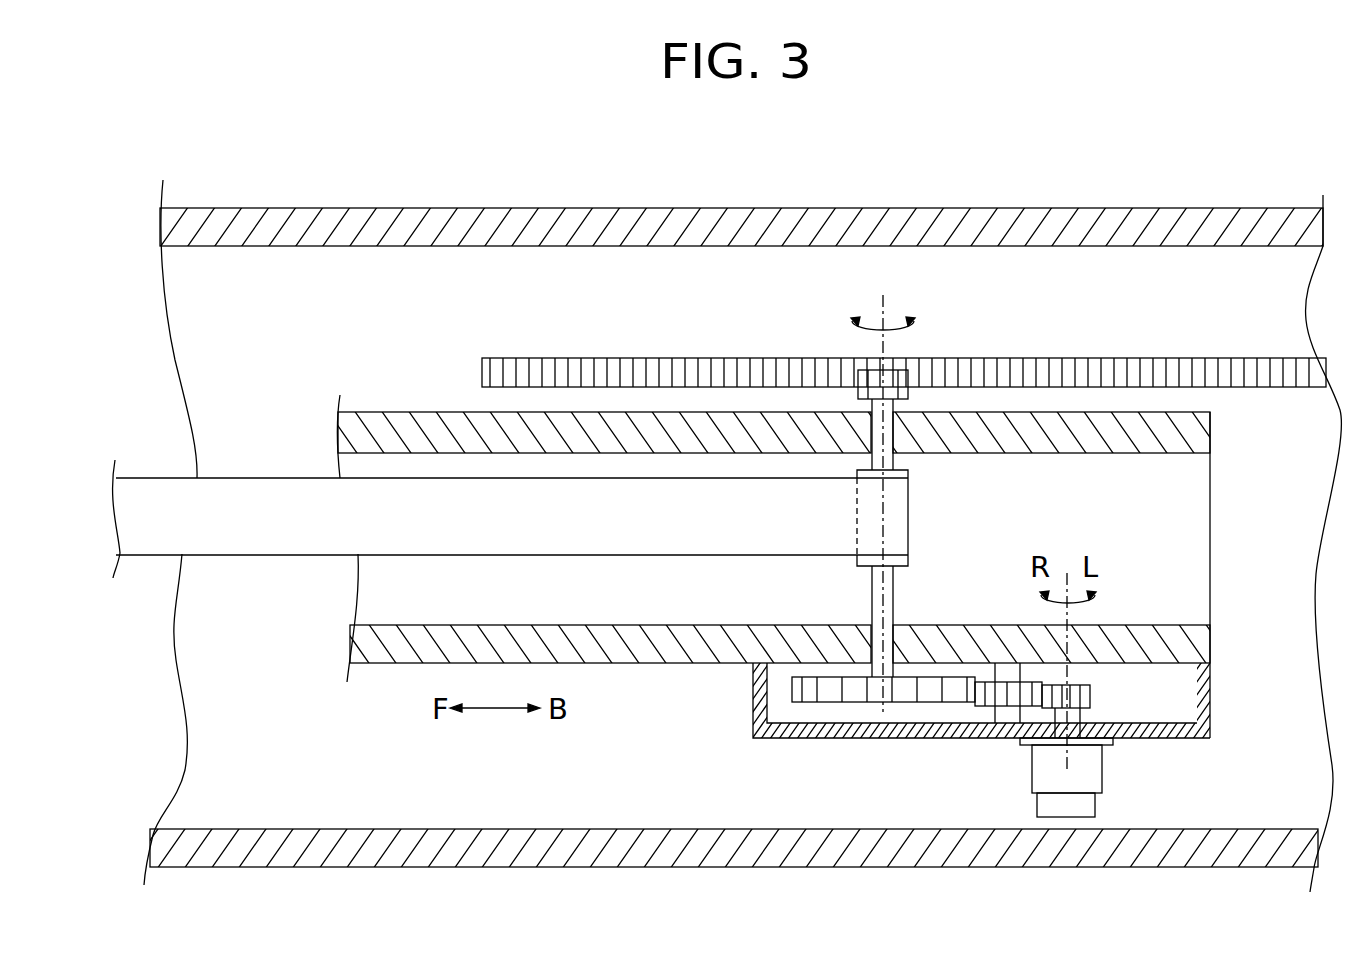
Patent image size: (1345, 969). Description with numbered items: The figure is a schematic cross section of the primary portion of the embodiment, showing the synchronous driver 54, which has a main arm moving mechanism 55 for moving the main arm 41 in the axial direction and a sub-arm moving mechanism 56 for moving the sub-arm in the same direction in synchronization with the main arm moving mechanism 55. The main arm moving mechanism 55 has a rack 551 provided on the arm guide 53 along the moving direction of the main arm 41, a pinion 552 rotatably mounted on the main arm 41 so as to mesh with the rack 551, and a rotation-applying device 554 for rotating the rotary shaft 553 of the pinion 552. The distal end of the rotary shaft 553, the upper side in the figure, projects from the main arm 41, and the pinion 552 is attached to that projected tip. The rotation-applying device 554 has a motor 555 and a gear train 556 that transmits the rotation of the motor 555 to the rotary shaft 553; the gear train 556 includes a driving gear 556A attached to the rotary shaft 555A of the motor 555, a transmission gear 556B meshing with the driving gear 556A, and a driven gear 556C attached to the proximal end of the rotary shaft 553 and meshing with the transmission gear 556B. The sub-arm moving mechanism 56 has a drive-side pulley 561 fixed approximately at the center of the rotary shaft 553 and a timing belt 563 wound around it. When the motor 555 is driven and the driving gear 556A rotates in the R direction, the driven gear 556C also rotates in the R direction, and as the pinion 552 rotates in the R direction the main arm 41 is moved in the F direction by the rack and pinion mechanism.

The main arm 41 is at (390, 418).
The arm guide 53 is at (945, 218).
The synchronous driver 54 is at (1097, 296).
The main arm moving mechanism 55 is at (1082, 518).
The sub-arm moving mechanism 56 is at (779, 567).
The rack 551 is at (1136, 365).
The pinion 552 is at (907, 368).
The rotary shaft 553 is at (889, 588).
The rotation-applying device 554 is at (838, 602).
The motor 555 is at (1087, 782).
The rotary shaft of the motor 555A is at (1077, 720).
The gear train 556 is at (936, 746).
The driving gear 556A is at (1018, 739).
The transmission gear 556B is at (998, 696).
The driven gear 556C is at (865, 695).
The drive-side pulley 561 is at (907, 473).
The timing belt 563 is at (607, 546).